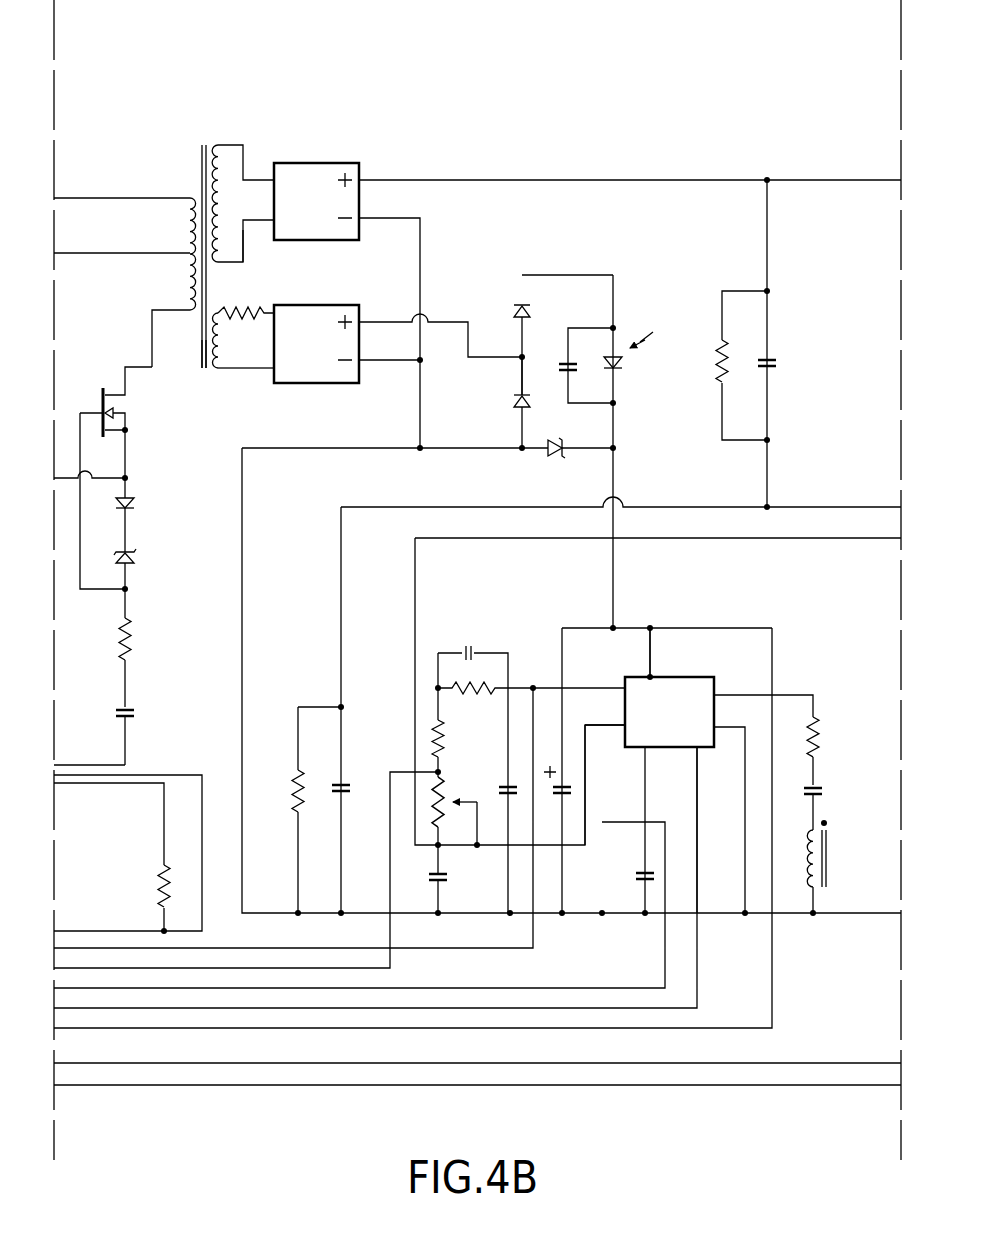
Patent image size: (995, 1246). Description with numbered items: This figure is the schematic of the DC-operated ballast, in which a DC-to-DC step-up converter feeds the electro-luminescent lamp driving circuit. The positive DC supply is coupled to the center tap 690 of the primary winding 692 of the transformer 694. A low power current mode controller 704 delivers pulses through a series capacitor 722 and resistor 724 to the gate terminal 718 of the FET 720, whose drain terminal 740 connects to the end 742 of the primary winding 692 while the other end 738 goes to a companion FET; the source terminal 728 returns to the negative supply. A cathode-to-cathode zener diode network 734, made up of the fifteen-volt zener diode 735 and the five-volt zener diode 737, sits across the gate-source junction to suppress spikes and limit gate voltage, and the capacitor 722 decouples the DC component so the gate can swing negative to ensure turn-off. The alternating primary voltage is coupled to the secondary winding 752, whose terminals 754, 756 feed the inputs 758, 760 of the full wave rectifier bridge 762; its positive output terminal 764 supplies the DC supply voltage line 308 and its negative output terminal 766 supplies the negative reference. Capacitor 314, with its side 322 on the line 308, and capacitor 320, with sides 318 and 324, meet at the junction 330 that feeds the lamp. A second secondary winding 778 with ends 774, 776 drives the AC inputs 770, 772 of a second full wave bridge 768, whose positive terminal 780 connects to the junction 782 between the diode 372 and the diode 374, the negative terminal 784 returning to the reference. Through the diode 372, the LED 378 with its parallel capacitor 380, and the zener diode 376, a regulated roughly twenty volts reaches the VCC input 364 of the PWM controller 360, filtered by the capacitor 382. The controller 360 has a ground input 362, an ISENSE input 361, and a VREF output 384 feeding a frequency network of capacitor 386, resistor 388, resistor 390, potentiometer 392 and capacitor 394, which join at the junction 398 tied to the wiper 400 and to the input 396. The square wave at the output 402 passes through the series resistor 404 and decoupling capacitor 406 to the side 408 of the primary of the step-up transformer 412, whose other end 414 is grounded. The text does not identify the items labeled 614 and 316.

The power supply circuit 614 is at (208, 60).
The transformer 694 is at (214, 100).
The secondary winding 752 is at (227, 128).
The secondary winding terminal 754 is at (250, 173).
The secondary winding terminal 756 is at (252, 233).
The rectifier bridge input 758 is at (275, 172).
The rectifier bridge input 760 is at (272, 228).
The full wave rectifier bridge circuit means 762 is at (352, 160).
The positive polarity DC output terminal 764 is at (366, 180).
The negative polarity output terminal 766 is at (363, 218).
The DC voltage supply line 308 is at (660, 178).
The other side of capacitor 314 322 is at (768, 235).
The capacitor 314 is at (773, 360).
The capacitor 316 is at (770, 422).
The junction of capacitors 314 and 320 330 is at (768, 503).
The diode 372 is at (510, 305).
The diode 374 is at (518, 407).
The zener diode 376 is at (550, 456).
The light emitting diode 378 is at (646, 320).
The capacitor 380 is at (560, 360).
The DC positive polarity output terminal 780 is at (380, 321).
The junction 782 is at (518, 360).
The DC negative polarity terminal 784 is at (365, 363).
The AC input terminal 770 is at (263, 305).
The AC input terminal 772 is at (270, 373).
The end of second secondary winding 774 is at (222, 315).
The end of second secondary winding 776 is at (220, 372).
The full wave bridge 768 is at (345, 386).
The end of primary winding 738 is at (120, 198).
The center tap of primary winding 690 is at (120, 253).
The primary winding 692 is at (183, 187).
The other end of primary winding 742 is at (185, 305).
The drain terminal 740 is at (152, 333).
The gate terminal 718 is at (93, 413).
The FET 720 is at (130, 398).
The second secondary winding 778 is at (207, 390).
The source terminal 728 is at (127, 465).
The zener diode 735 is at (137, 495).
The cathode-to-cathode zener diode network 734 is at (163, 533).
The zener diode 737 is at (128, 563).
The resistor 724 is at (131, 638).
The capacitor 722 is at (131, 705).
The low power controller 704 is at (163, 750).
The one side of capacitor 320 318 is at (345, 723).
The capacitor 320 is at (343, 793).
The other side of capacitor 320 324 is at (343, 857).
The capacitor 386 is at (482, 650).
The resistor 388 is at (498, 688).
The resistor 390 is at (440, 750).
The potentiometer 392 is at (447, 773).
The wiper 400 is at (477, 802).
The junction 398 is at (440, 855).
The capacitor 394 is at (440, 878).
The VREF output 384 is at (623, 692).
The VCC input 364 is at (648, 672).
The PWM controller 360 is at (677, 677).
The controller input 396 is at (620, 728).
The capacitor 382 is at (567, 797).
The ISENSE input 361 is at (647, 748).
The ground reference potential input 362 is at (700, 748).
The controller output 402 is at (717, 692).
The series resistor 404 is at (818, 727).
The decoupling capacitor 406 is at (818, 773).
The side of primary winding 408 is at (816, 813).
The other end of primary winding 414 is at (815, 903).
The step up transformer 412 is at (805, 863).